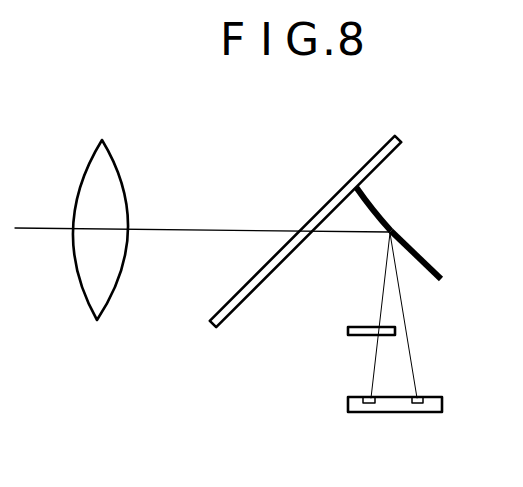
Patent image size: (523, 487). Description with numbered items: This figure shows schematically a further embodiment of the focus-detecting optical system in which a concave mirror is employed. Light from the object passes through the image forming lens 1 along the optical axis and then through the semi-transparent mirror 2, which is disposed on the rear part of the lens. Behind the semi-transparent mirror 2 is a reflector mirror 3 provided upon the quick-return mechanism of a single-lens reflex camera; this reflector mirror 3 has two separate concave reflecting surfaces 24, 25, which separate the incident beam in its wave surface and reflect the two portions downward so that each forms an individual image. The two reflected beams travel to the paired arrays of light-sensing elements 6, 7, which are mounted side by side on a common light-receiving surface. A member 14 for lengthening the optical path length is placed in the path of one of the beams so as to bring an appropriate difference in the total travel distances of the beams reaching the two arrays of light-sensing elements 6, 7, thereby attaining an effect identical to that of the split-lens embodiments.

The image forming lens 1 is at (129, 204).
The semi-transparent mirror 2 is at (358, 172).
The reflector mirror 3 is at (420, 230).
The concave reflecting surface 24 is at (363, 212).
The concave reflecting surface 25 is at (405, 256).
The member for lengthening the optical path length 14 is at (356, 336).
The array of light-sensing elements 6 is at (371, 413).
The array of light-sensing elements 7 is at (418, 413).